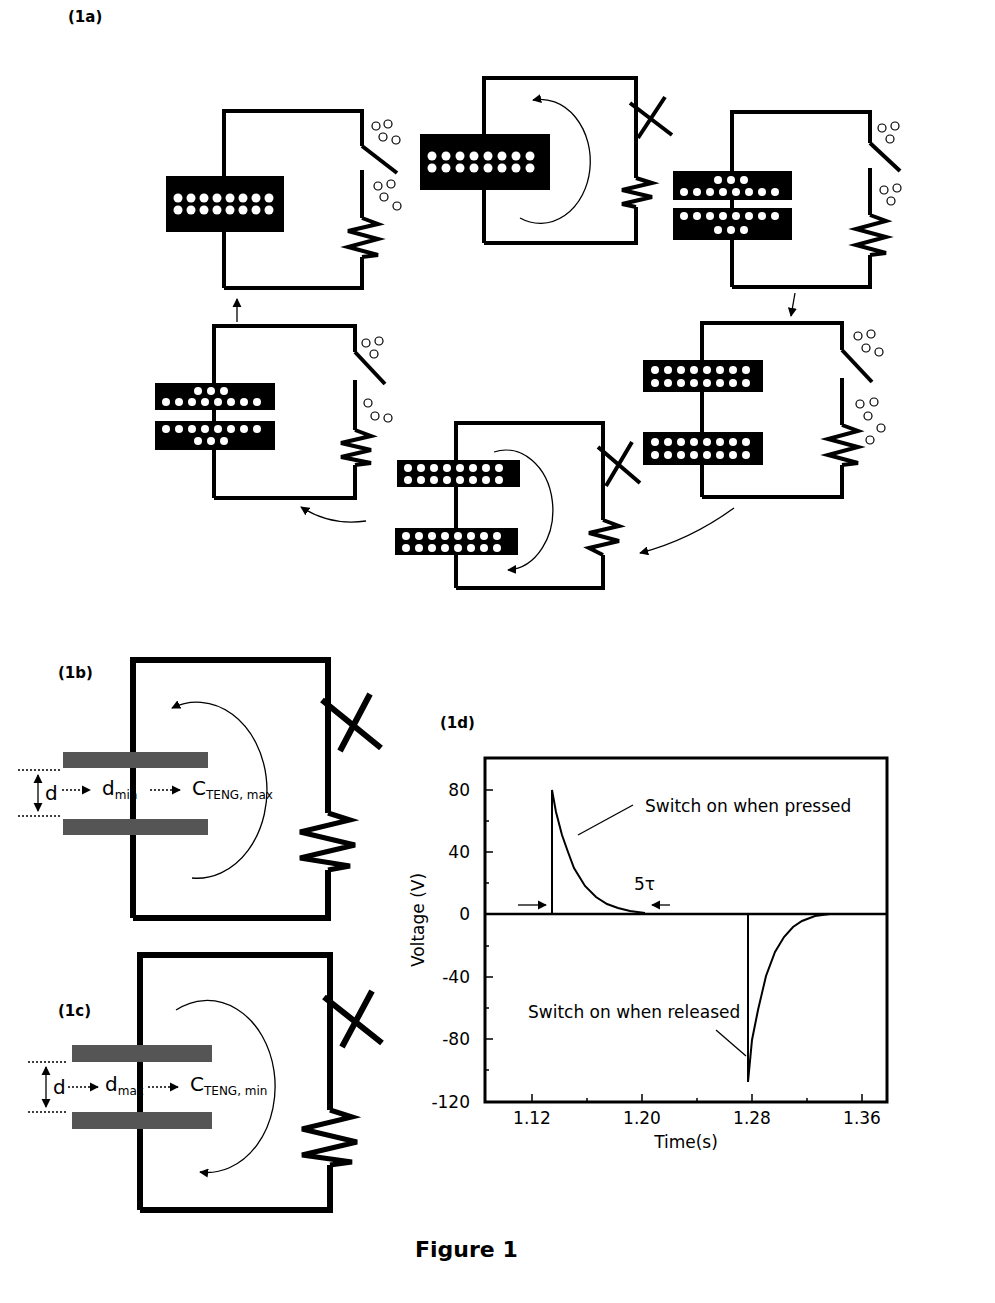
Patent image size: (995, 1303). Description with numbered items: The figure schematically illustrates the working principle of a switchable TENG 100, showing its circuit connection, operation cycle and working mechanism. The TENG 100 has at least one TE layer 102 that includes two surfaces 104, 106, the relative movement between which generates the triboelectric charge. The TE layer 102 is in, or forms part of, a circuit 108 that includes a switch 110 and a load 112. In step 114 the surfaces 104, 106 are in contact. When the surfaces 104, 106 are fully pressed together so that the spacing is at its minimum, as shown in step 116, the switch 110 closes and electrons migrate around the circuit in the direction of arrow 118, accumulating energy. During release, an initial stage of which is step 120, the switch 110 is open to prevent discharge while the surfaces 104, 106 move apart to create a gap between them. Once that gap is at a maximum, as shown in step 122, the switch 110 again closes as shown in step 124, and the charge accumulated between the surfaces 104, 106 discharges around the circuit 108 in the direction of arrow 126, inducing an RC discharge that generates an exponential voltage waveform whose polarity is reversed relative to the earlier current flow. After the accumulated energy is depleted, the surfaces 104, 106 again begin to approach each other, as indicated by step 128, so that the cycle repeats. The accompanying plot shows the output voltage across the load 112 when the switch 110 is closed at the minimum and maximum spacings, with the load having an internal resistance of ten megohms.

The switchable TENG 100 is at (210, 150).
The TE layer 102 is at (68, 168).
The surface 104 is at (166, 197).
The surface 106 is at (166, 211).
The circuit 108 is at (222, 256).
The switch 110 is at (365, 165).
The load 112 is at (382, 237).
The step 114 is at (217, 188).
The step 116 is at (366, 101).
The arrow 118 is at (562, 161).
The step 120 is at (730, 126).
The step 122 is at (762, 426).
The step 124 is at (470, 492).
The arrow 126 is at (537, 510).
The step 128 is at (273, 395).